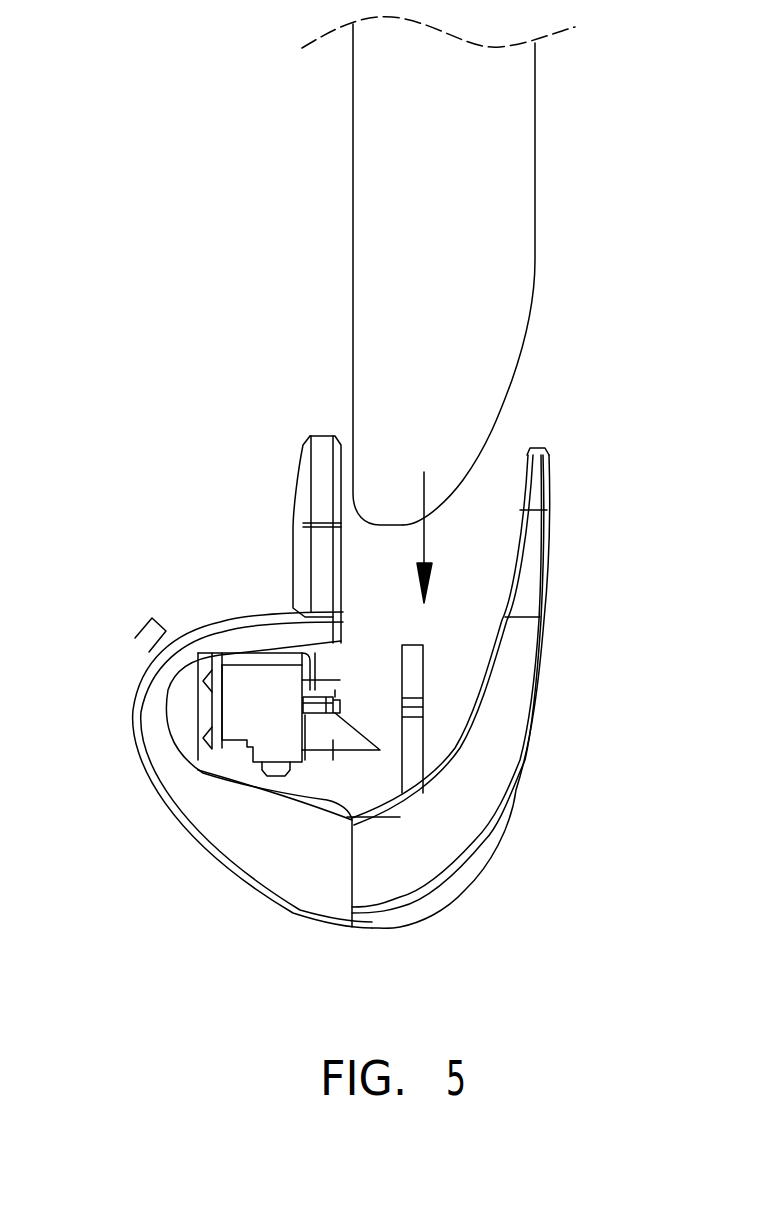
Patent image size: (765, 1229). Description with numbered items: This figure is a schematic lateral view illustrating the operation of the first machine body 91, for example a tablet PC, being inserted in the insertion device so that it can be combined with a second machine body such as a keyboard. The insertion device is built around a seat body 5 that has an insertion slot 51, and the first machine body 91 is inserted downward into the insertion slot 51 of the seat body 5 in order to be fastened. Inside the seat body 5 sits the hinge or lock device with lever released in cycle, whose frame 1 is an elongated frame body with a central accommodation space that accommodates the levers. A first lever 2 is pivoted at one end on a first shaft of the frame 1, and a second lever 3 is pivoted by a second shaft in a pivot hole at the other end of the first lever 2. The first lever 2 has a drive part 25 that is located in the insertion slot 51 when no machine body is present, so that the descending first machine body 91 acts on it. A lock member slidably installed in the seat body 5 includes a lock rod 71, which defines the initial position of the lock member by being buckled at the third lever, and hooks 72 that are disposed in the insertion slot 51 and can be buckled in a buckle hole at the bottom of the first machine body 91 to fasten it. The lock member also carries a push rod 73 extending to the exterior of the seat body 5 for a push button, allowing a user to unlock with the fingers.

The frame 1 is at (243, 708).
The first lever 2 is at (322, 735).
The second lever 3 is at (322, 690).
The seat body 5 is at (207, 805).
The drive part 25 is at (357, 743).
The insertion slot 51 is at (480, 568).
The lock rod 71 is at (342, 710).
The hook 72 is at (412, 668).
The push rod 73 is at (151, 632).
The first machine body 91 is at (490, 218).